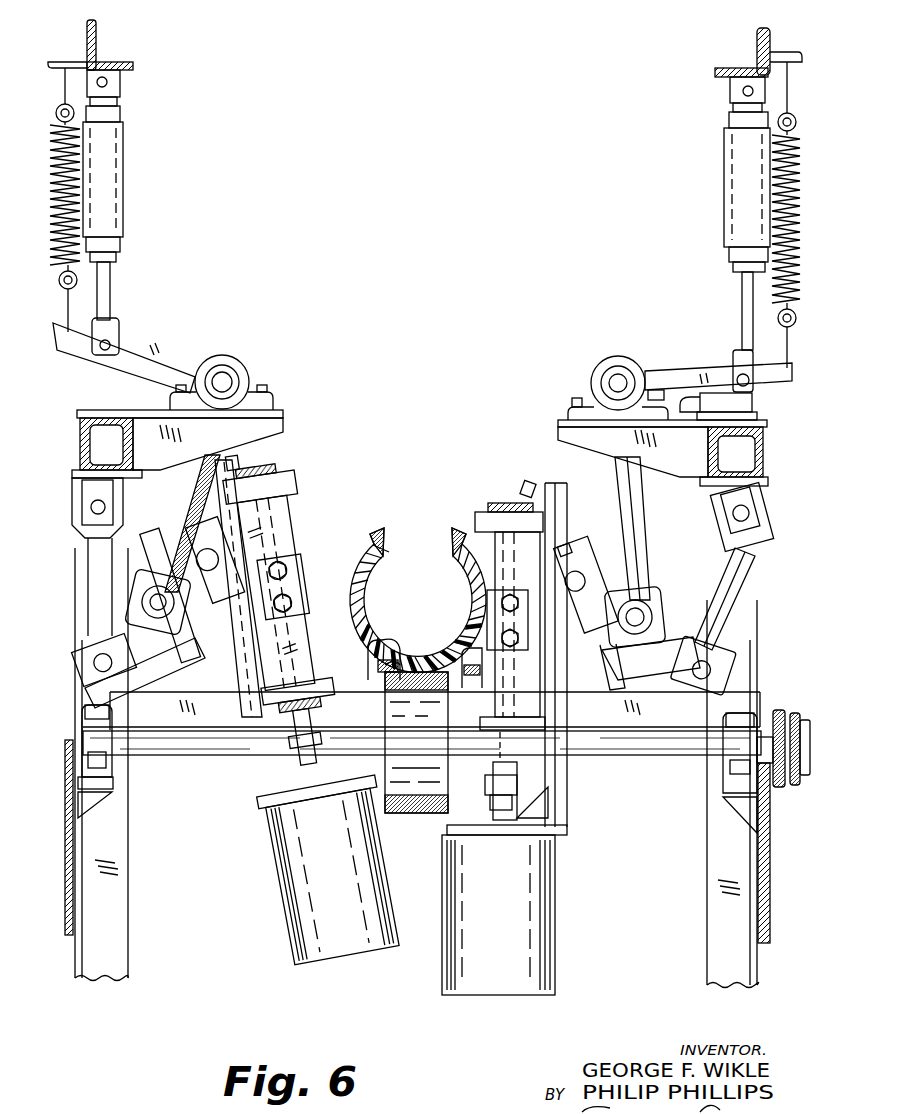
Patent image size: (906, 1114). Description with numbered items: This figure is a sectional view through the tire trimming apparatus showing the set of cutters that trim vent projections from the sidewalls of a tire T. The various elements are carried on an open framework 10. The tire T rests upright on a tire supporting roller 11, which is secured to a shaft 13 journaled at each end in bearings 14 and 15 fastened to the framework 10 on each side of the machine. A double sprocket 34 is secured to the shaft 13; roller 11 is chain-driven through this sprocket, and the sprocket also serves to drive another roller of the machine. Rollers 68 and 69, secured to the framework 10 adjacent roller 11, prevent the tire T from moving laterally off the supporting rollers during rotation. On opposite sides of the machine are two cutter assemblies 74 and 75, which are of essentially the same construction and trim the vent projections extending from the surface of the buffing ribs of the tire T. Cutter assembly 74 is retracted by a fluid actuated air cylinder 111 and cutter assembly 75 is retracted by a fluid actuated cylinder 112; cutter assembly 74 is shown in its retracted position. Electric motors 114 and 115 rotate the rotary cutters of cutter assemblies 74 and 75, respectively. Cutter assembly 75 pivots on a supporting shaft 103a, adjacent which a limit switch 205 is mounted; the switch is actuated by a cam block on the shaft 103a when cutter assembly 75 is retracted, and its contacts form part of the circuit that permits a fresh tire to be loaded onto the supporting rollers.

The open framework 10 is at (124, 46).
The tire supporting roller 11 is at (418, 810).
The shaft 13 is at (655, 752).
The bearing 14 is at (738, 735).
The bearing 15 is at (90, 723).
The double sprocket 34 is at (805, 785).
The roller 68 is at (346, 632).
The roller 69 is at (486, 680).
The cutter assembly 74 is at (308, 458).
The cutter assembly 75 is at (508, 486).
The supporting shaft 103a is at (630, 354).
The fluid actuated air cylinder 111 is at (110, 180).
The fluid actuated cylinder 112 is at (742, 163).
The electric motor 114 is at (306, 900).
The electric motor 115 is at (535, 903).
The limit switch 205 is at (723, 400).
The tire T is at (380, 533).